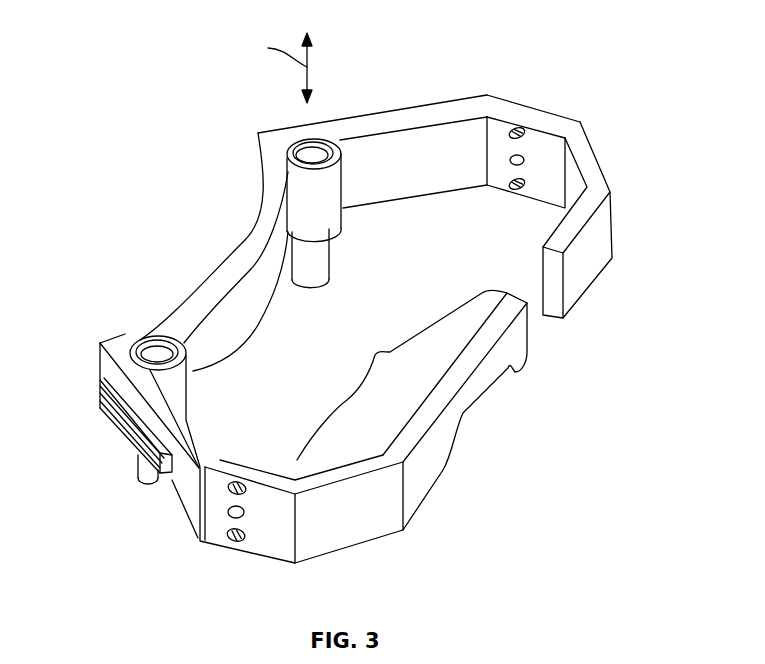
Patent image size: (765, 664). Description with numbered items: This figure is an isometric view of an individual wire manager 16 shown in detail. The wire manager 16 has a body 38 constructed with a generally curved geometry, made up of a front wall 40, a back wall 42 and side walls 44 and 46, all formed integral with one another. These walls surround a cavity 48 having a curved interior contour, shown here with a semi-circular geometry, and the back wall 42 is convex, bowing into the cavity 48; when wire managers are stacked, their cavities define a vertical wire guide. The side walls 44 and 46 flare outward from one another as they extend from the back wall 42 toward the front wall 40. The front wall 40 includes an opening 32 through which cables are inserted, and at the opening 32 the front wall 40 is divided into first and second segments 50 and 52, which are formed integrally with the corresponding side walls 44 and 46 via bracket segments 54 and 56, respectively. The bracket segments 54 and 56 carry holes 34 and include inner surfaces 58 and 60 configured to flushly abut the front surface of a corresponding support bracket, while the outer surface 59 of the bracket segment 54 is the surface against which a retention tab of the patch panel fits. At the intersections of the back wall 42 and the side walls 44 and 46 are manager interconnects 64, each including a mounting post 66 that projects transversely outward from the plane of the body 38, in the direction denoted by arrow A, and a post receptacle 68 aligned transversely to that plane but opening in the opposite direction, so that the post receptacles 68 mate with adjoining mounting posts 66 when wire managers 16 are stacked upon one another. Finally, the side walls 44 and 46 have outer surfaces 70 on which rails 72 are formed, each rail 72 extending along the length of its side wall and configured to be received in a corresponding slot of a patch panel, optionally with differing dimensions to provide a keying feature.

The wire manager 16 is at (163, 47).
The opening 32 is at (547, 332).
The holes 34 is at (508, 133).
The body 38 is at (118, 372).
The front wall 40 is at (417, 495).
The back wall 42 is at (205, 282).
The side wall 44 is at (195, 437).
The side wall 46 is at (438, 113).
The cavity 48 is at (287, 369).
The first segment 50 is at (402, 375).
The second segment 52 is at (652, 140).
The bracket segment 54 is at (197, 543).
The bracket segment 56 is at (586, 112).
The inner surface 58 is at (260, 472).
The outer surface 59 is at (287, 548).
The inner surface 60 is at (550, 193).
The manager interconnect 64 is at (344, 178).
The mounting post 66 is at (320, 258).
The post receptacle 68 is at (305, 153).
The outer surface 70 is at (185, 497).
The rail 72 is at (125, 418).